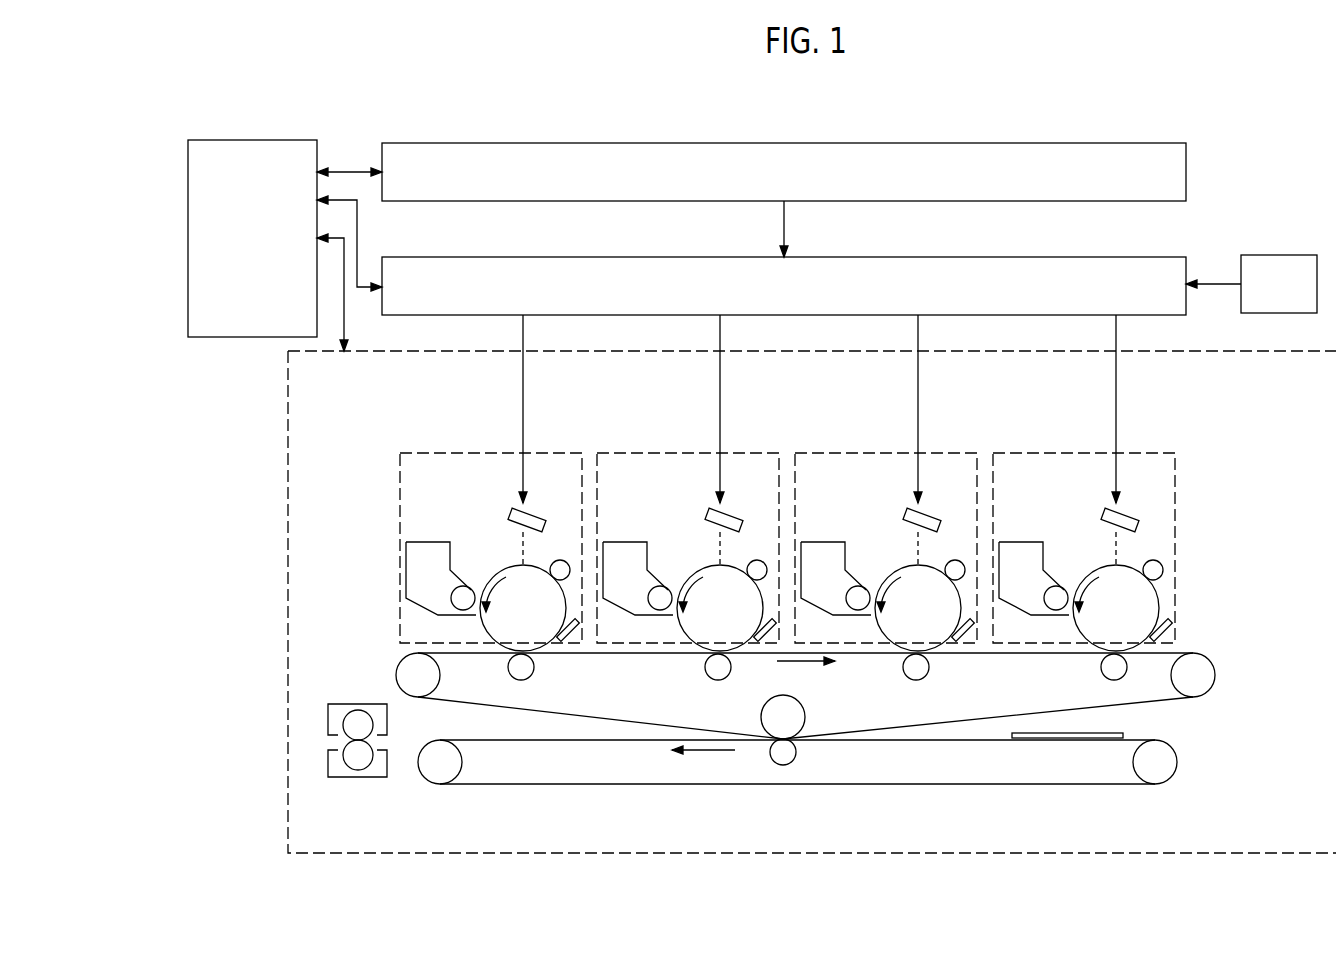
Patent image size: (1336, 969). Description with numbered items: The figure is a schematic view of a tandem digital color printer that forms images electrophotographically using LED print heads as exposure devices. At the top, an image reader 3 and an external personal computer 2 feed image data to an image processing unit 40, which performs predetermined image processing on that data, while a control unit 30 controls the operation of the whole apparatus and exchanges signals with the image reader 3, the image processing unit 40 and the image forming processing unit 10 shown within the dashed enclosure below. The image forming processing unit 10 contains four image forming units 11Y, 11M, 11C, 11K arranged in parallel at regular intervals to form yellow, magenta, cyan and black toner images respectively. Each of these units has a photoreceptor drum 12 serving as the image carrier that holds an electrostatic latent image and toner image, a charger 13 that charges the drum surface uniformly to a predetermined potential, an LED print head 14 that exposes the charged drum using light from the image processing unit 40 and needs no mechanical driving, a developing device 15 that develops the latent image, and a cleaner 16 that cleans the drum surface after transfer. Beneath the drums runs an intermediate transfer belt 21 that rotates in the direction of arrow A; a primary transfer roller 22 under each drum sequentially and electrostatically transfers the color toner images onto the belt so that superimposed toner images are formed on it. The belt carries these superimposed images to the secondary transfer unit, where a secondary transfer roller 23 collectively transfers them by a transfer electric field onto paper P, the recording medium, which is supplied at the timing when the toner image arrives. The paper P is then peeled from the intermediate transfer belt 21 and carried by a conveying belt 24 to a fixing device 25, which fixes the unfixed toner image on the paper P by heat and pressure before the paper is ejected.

The personal computer 2 is at (1283, 255).
The image reader 3 is at (1186, 162).
The image forming processing unit 10 is at (287, 810).
The image forming unit 11Y is at (470, 452).
The image forming unit 11M is at (752, 452).
The image forming unit 11C is at (848, 452).
The image forming unit 11K is at (1144, 452).
The photoreceptor drum 12 is at (502, 570).
The charger 13 is at (561, 558).
The LED print head 14 is at (529, 506).
The developing device 15 is at (405, 541).
The cleaner 16 is at (569, 648).
The intermediate transfer belt 21 is at (1180, 700).
The primary transfer roller 22 is at (534, 672).
The secondary transfer roller 23 is at (797, 753).
The conveying belt 24 is at (477, 785).
The fixing device 25 is at (328, 717).
The control unit 30 is at (187, 202).
The image processing unit 40 is at (1178, 255).
The paper P is at (1102, 732).
The arrow A is at (806, 675).